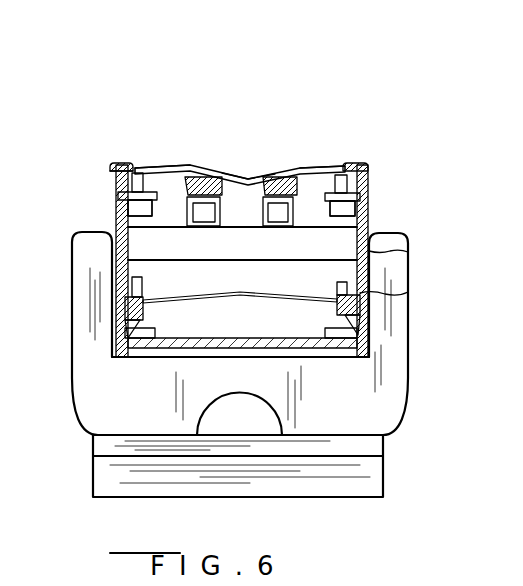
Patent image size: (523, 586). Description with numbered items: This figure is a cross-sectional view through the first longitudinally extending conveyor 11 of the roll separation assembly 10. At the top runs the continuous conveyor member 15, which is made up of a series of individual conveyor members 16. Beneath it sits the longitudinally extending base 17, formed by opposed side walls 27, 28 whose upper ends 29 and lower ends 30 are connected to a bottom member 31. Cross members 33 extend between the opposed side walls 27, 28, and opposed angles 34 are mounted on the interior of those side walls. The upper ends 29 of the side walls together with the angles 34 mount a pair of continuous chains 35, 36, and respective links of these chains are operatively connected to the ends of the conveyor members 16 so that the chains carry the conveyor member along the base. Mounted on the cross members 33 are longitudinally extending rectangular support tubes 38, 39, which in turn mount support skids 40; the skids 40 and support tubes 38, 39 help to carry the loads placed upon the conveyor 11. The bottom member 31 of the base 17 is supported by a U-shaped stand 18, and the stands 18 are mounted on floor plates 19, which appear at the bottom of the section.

The roll separation assembly 10 is at (293, 158).
The first longitudinally extending conveyor 11 is at (153, 162).
The continuous conveyor member 15 is at (166, 152).
The individual conveyor members 16 is at (175, 165).
The longitudinally extending base 17 is at (367, 228).
The U-shaped stands 18 is at (408, 366).
The floor plates 19 is at (383, 478).
The side wall 27 is at (115, 224).
The side wall 28 is at (408, 249).
The upper ends 29 is at (146, 216).
The lower ends 30 is at (123, 357).
The bottom member 31 is at (195, 358).
The cross members 33 is at (248, 257).
The angles 34 is at (350, 306).
The continuous chain 35 is at (116, 173).
The continuous chain 36 is at (368, 168).
The longitudinally extending rectangular tube 38 is at (244, 178).
The longitudinally extending rectangular tube 39 is at (308, 165).
The support skids 40 is at (293, 172).